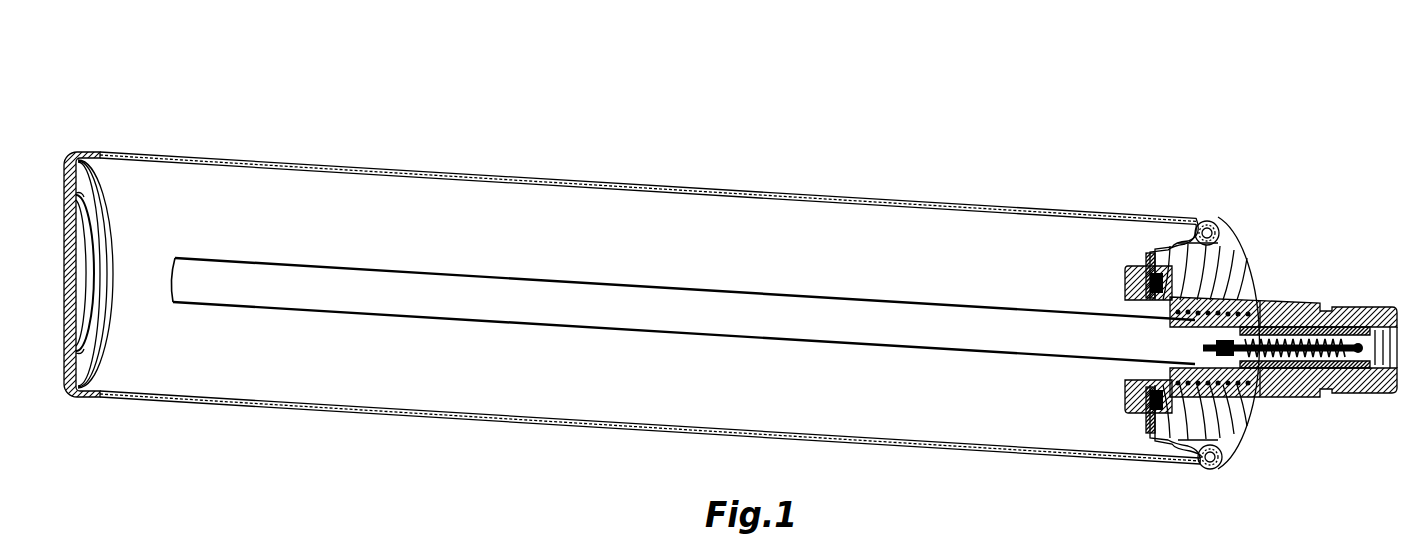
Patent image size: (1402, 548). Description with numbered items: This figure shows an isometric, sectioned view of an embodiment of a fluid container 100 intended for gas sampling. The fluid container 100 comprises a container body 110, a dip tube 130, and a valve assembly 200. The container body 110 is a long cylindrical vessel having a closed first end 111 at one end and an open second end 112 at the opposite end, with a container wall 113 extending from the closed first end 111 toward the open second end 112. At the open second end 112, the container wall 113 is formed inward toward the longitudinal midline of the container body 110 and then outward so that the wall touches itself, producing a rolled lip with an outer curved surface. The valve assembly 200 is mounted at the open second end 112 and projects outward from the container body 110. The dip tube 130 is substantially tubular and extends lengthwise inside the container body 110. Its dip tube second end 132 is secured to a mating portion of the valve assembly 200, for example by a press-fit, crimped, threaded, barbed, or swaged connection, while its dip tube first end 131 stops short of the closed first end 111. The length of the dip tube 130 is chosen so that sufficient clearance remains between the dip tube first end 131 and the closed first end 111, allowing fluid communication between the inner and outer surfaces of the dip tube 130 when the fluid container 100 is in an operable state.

The fluid container 100 is at (680, 95).
The container body 110 is at (630, 395).
The closed first end 111 is at (93, 255).
The open second end 112 is at (1176, 233).
The container wall 113 is at (878, 442).
The dip tube 130 is at (805, 308).
The dip tube first end 131 is at (166, 280).
The dip tube second end 132 is at (1194, 340).
The valve assembly 200 is at (1278, 300).